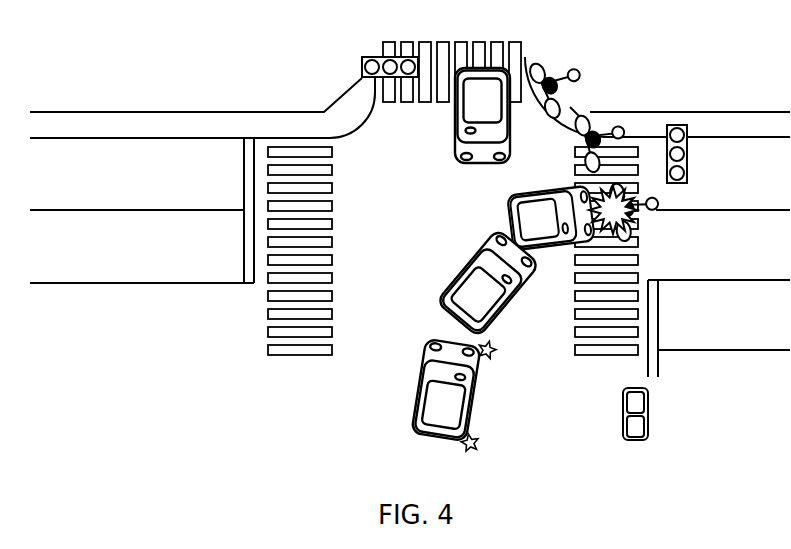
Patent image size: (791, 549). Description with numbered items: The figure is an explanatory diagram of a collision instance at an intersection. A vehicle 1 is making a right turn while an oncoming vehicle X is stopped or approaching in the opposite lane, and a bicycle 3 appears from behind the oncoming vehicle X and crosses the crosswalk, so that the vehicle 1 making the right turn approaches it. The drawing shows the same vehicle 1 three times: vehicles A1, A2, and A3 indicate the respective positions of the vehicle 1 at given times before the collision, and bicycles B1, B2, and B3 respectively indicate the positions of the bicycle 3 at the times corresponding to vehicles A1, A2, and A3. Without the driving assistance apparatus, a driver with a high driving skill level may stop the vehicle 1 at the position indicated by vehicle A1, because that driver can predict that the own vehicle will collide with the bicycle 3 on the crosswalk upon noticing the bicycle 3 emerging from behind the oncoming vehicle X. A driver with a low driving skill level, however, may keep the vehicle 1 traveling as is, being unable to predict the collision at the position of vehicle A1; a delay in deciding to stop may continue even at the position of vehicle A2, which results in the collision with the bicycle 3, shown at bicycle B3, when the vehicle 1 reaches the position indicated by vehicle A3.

The vehicle 1 is at (455, 395).
The bicycle 3 is at (573, 66).
The oncoming vehicle X is at (469, 115).
The vehicle A1 is at (509, 420).
The vehicle A2 is at (483, 283).
The vehicle A3 is at (551, 207).
The bicycle B1 is at (590, 32).
The bicycle B2 is at (613, 140).
The bicycle B3 is at (644, 218).